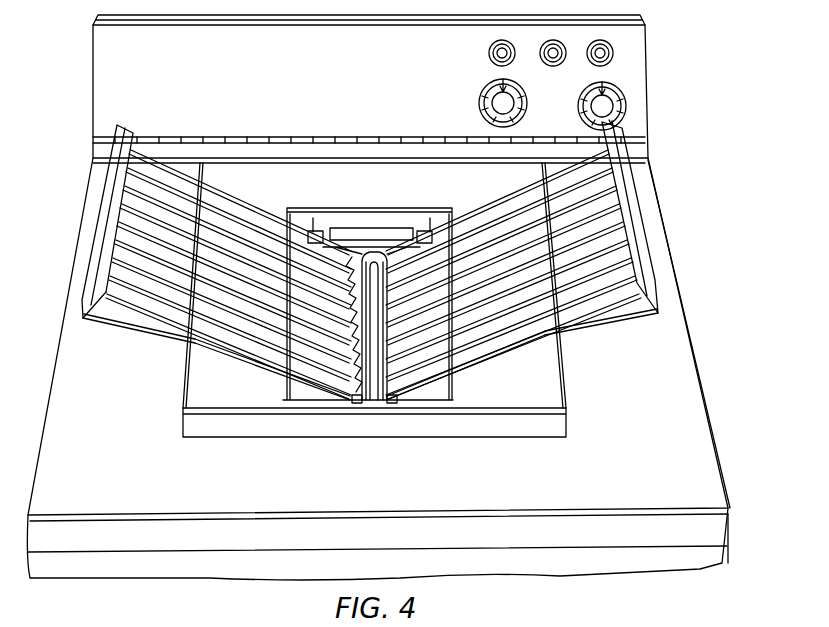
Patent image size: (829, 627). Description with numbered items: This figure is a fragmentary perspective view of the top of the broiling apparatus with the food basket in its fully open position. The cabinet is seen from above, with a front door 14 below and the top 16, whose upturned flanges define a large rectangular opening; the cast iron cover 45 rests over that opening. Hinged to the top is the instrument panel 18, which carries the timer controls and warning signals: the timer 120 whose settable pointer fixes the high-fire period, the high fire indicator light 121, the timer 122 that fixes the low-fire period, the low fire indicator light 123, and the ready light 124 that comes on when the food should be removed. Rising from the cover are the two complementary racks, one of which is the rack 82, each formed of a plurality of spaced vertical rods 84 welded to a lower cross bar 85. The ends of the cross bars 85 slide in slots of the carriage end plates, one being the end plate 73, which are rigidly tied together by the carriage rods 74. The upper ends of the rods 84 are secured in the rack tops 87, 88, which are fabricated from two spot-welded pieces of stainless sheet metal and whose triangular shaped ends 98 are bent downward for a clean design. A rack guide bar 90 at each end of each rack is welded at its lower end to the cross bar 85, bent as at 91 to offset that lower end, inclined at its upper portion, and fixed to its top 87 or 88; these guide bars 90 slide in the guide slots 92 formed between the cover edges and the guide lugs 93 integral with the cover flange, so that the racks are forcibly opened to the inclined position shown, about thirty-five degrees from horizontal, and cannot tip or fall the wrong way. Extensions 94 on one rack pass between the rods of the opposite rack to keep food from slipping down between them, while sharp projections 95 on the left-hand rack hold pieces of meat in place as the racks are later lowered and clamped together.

The front door 14 is at (665, 562).
The top 16 is at (70, 385).
The instrument panel 18 is at (119, 84).
The cover 45 is at (224, 420).
The end plate 73 is at (376, 255).
The carriage rod 74 is at (374, 404).
The rack 82 is at (167, 346).
The vertical rod 84 is at (256, 222).
The cross bar 85 is at (356, 404).
The rack top 87 is at (82, 305).
The rack top 88 is at (651, 224).
The rack guide bar 90 is at (220, 215).
The bend 91 is at (313, 218).
The guide slot 92 is at (318, 230).
The guide lug 93 is at (368, 228).
The extension 94 is at (345, 368).
The sharp projection 95 is at (282, 330).
The triangular shaped end 98 is at (88, 320).
The timer 120 is at (480, 104).
The high fire indicator light 121 is at (489, 53).
The timer 122 is at (580, 112).
The low fire indicator light 123 is at (608, 53).
The ready light 124 is at (540, 53).